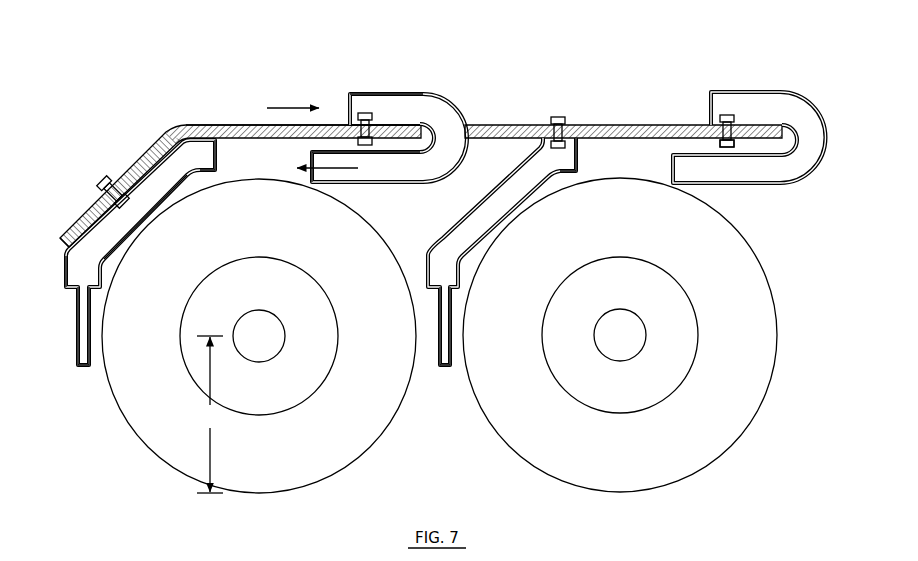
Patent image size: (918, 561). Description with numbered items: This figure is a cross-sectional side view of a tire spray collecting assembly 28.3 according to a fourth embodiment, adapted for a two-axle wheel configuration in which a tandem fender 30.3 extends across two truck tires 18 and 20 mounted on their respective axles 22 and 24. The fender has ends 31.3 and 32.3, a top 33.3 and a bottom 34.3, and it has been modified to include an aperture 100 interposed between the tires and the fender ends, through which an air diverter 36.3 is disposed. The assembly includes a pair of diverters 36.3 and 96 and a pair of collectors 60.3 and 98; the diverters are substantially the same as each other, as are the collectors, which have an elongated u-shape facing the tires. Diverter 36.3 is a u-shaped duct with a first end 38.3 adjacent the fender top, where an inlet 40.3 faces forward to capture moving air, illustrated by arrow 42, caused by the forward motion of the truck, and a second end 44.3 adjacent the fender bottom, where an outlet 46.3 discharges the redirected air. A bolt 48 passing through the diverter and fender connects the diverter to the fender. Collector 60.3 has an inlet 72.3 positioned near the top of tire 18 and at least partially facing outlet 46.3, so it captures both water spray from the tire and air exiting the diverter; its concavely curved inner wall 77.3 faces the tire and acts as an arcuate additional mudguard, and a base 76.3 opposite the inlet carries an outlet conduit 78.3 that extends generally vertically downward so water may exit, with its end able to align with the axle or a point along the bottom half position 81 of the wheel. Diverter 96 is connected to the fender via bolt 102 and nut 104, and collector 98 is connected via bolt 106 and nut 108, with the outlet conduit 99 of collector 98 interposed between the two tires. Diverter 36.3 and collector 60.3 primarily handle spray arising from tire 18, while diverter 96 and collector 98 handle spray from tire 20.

The tire 18 is at (278, 252).
The tire 20 is at (630, 224).
The axle 22 is at (260, 336).
The axle 24 is at (621, 328).
The tire spray collecting assembly 28.3 is at (650, 236).
The fender 30.3 is at (237, 119).
The end of the fender 31.3 is at (60, 238).
The rear end of the fender 32.3 is at (792, 141).
The top of the fender 33.3 is at (250, 124).
The bottom of the fender 34.3 is at (256, 143).
The air diverter 36.3 is at (433, 95).
The first end of the diverter 38.3 is at (350, 93).
The inlet of the diverter 40.3 is at (346, 98).
The arrow 42 is at (290, 107).
The second end of the diverter 44.3 is at (311, 186).
The outlet of the diverter 46.3 is at (300, 181).
The bolt 48 is at (345, 170).
The collector 60.3 is at (133, 257).
The inlet of the collector 72.3 is at (225, 166).
The base of the collector 76.3 is at (67, 287).
The inner wall of the collector 77.3 is at (133, 232).
The outlet conduit 78.3 is at (78, 357).
The bottom half position of the wheel 81 is at (210, 414).
The air diverter 96 is at (757, 90).
The collector 98 is at (535, 199).
The outlet conduit 99 is at (445, 367).
The aperture 100 is at (463, 118).
The bolt 102 is at (725, 118).
The nut 104 is at (727, 144).
The bolt 106 is at (560, 115).
The nut 108 is at (565, 148).